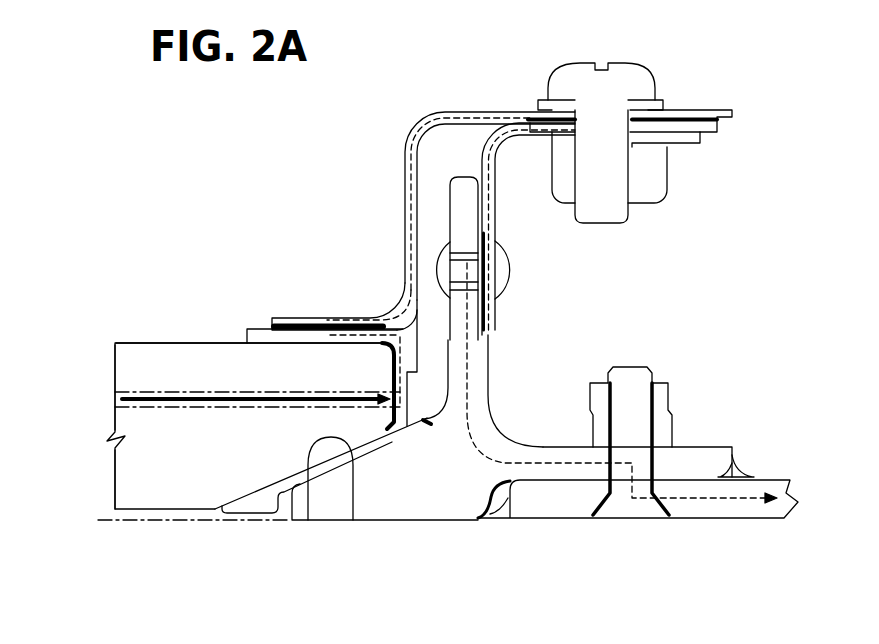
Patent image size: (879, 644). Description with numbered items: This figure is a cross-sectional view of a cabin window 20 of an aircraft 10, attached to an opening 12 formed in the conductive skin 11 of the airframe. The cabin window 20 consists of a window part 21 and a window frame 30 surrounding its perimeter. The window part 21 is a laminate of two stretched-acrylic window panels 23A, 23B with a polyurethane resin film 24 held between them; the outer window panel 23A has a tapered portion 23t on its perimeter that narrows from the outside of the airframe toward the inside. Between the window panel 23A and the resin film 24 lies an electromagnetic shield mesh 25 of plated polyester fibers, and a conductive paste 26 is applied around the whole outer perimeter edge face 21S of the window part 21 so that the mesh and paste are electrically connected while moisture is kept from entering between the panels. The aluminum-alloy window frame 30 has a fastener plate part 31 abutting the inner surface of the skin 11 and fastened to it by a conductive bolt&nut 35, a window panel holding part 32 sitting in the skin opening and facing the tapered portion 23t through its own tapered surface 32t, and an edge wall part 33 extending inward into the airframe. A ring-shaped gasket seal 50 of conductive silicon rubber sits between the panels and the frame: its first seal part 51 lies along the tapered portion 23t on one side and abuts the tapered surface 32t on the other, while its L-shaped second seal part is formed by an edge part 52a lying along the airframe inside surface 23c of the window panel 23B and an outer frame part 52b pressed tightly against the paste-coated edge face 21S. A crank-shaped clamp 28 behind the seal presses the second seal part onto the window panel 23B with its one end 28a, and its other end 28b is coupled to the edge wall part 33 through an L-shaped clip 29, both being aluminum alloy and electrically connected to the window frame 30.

The aircraft 10 is at (777, 530).
The skin 11 is at (737, 515).
The opening 12 is at (493, 508).
The cabin window 20 is at (139, 522).
The window part 21 is at (190, 500).
The outer perimeter edge face 21S is at (400, 352).
The window panel 23A is at (128, 492).
The window panel 23B is at (128, 372).
The airframe inside surface 23c is at (138, 342).
The tapered portion 23t is at (255, 492).
The resin film 24 is at (192, 390).
The electromagnetic shield mesh 25 is at (136, 404).
The conductive paste 26 is at (383, 407).
The clamp 28 is at (403, 192).
The one end of clamp 28a is at (313, 317).
The other end of clamp 28b is at (697, 112).
The clip 29 is at (496, 215).
The window frame 30 is at (402, 530).
The fastener plate part 31 is at (715, 448).
The window panel holding part 32 is at (357, 517).
The tapered surface 32t is at (308, 497).
The edge wall part 33 is at (448, 180).
The bolt&nut 35 is at (667, 395).
The gasket seal 50 is at (262, 316).
The first seal part 51 is at (378, 448).
The edge part 52a is at (248, 328).
The outer frame part 52b is at (403, 380).